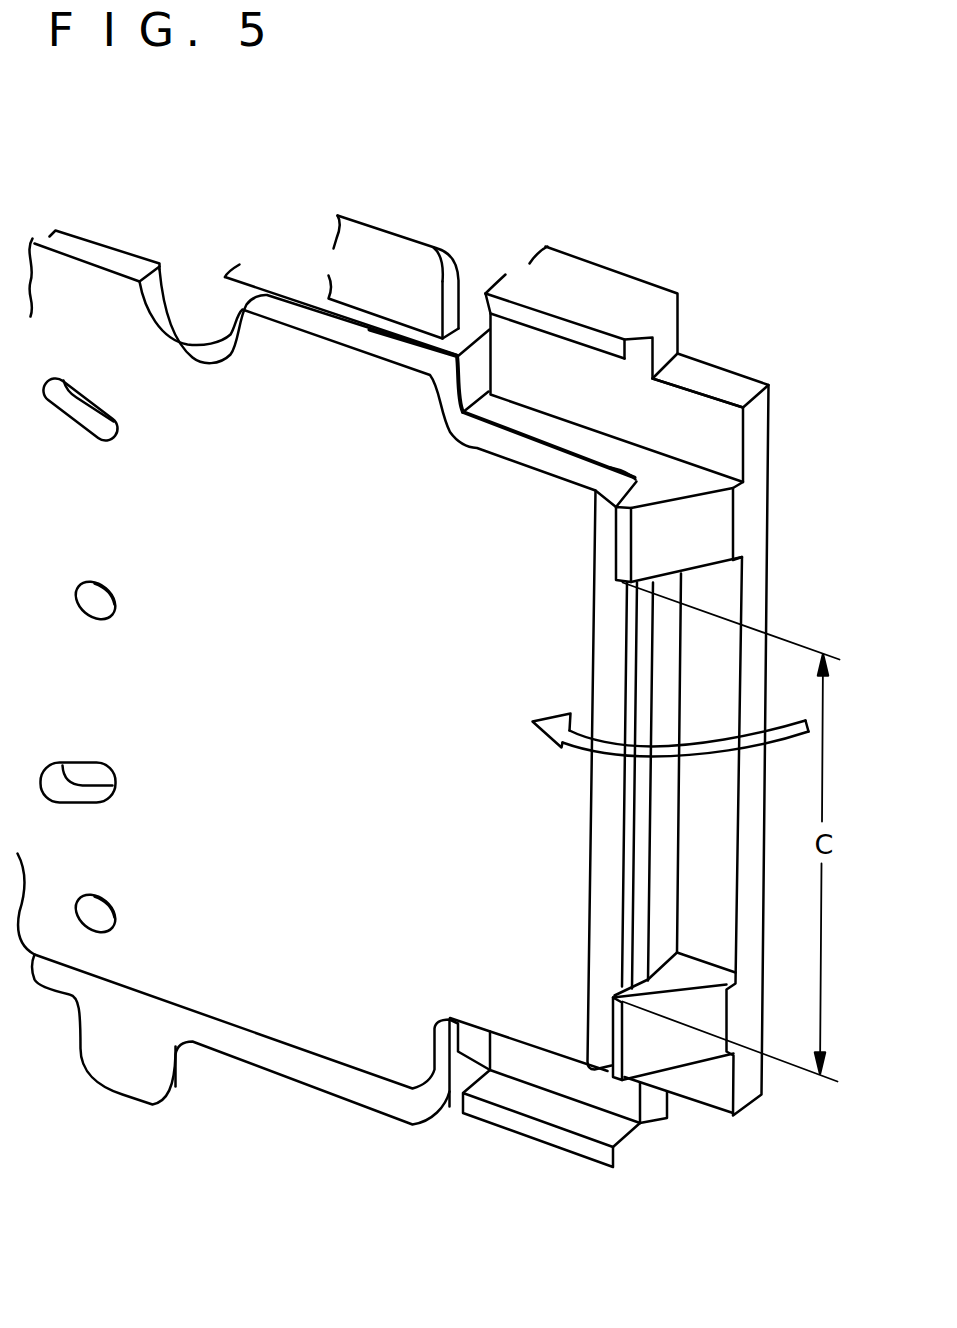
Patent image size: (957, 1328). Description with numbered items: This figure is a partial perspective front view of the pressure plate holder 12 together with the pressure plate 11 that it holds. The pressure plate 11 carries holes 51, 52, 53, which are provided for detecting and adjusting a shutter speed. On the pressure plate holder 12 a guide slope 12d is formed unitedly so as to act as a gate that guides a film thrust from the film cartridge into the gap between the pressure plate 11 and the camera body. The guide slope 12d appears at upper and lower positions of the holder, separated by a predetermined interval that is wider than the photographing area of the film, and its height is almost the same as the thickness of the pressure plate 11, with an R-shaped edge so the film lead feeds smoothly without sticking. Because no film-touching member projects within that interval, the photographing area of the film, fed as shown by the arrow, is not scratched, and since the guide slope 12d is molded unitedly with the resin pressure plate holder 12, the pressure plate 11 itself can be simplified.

The pressure plate 11 is at (562, 503).
The pressure plate holder 12 is at (755, 433).
The guide slope 12d is at (713, 545).
The hole 51 is at (97, 421).
The hole 52 is at (101, 608).
The hole 53 is at (111, 795).